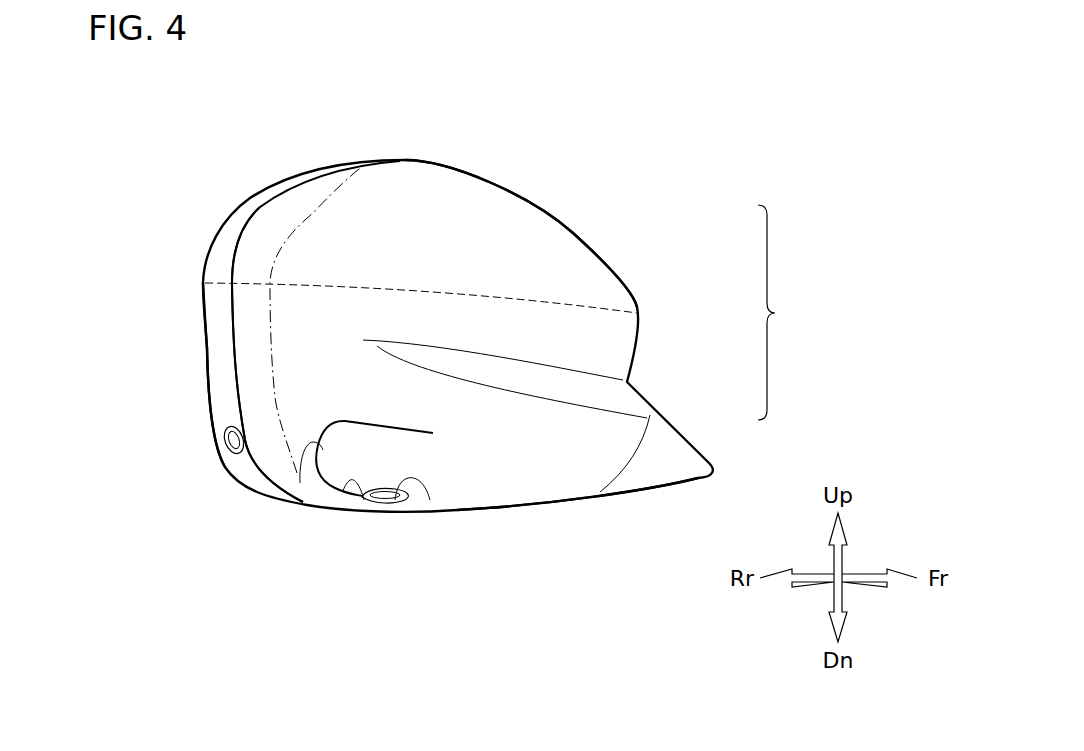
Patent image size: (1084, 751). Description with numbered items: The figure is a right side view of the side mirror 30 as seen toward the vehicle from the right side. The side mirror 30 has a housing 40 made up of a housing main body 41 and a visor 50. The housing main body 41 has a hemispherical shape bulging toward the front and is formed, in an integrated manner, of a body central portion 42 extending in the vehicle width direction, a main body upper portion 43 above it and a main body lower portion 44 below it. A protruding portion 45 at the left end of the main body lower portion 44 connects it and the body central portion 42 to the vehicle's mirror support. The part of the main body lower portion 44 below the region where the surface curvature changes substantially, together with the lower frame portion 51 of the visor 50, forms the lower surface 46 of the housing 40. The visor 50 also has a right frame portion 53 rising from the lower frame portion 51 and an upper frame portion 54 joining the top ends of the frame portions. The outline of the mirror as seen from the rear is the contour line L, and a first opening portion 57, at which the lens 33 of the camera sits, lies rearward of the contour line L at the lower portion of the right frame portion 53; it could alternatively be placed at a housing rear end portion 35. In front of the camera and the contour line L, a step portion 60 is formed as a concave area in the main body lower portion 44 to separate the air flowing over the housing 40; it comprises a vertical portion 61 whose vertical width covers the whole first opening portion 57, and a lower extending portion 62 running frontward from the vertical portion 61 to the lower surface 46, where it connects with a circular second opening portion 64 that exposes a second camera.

The side mirror 30 is at (511, 147).
The housing 40 is at (440, 146).
The housing main body 41 is at (784, 312).
The body central portion 42 is at (553, 335).
The main body upper portion 43 is at (528, 247).
The main body lower portion 44 is at (585, 428).
The protruding portion 45 is at (648, 470).
The lower surface 46 is at (567, 476).
The visor 50 is at (277, 190).
The lower frame portion 51 is at (268, 490).
The right frame portion 53 is at (215, 342).
The upper frame portion 54 is at (240, 233).
The first opening portion 57 is at (230, 433).
The lens 33 is at (223, 450).
The housing rear end portion 35 is at (267, 427).
The step portion 60 is at (400, 407).
The vertical portion 61 is at (300, 483).
The lower extending portion 62 is at (364, 500).
The second opening portion 64 is at (430, 500).
The contour line L is at (367, 163).